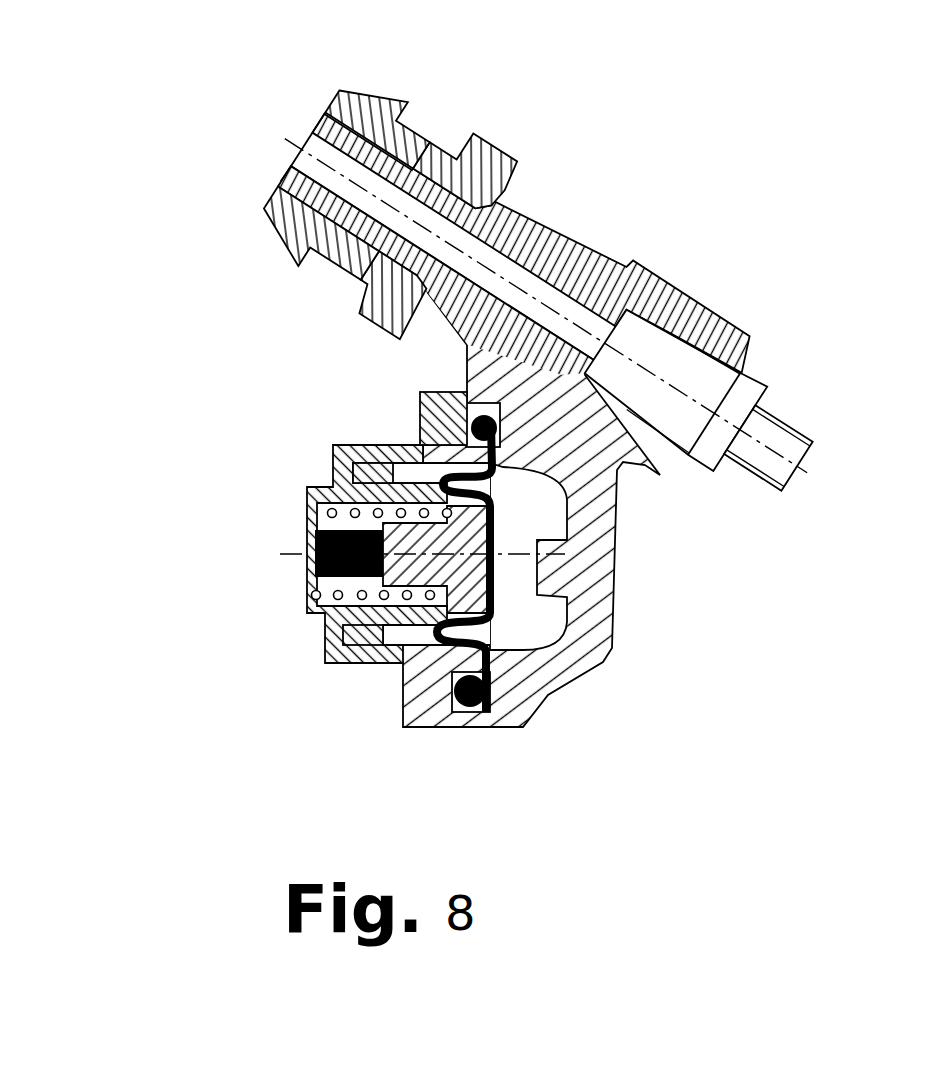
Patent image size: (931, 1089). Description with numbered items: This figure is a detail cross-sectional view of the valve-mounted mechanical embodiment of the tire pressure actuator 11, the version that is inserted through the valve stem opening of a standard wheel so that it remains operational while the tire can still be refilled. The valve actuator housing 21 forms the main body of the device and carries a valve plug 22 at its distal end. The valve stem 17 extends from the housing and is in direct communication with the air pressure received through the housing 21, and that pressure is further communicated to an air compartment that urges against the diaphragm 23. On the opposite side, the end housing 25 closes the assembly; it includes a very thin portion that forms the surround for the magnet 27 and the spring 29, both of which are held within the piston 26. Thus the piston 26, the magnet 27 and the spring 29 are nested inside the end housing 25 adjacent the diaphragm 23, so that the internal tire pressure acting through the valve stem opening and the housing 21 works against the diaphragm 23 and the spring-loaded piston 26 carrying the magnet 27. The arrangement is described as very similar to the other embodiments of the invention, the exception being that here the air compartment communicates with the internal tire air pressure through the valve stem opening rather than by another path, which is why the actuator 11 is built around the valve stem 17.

The actuator 11 is at (195, 347).
The valve stem 17 is at (777, 400).
The valve actuator housing 21 is at (565, 217).
The valve plug 22 is at (371, 89).
The diaphragm 23 is at (500, 629).
The end housing 25 is at (324, 443).
The piston 26 is at (357, 641).
The magnet 27 is at (310, 579).
The spring 29 is at (320, 514).